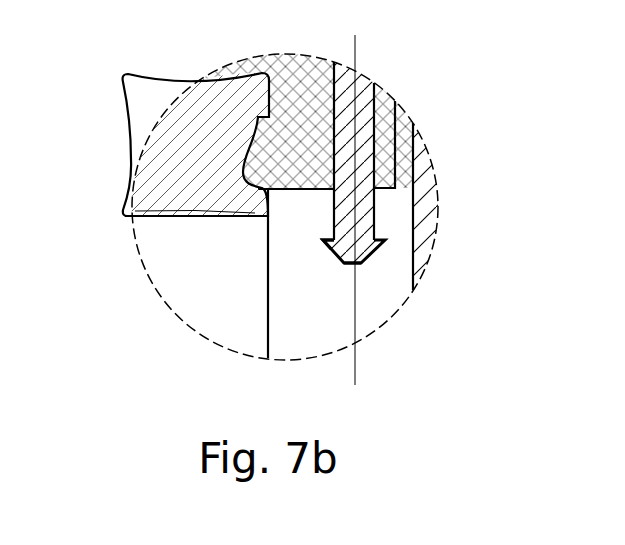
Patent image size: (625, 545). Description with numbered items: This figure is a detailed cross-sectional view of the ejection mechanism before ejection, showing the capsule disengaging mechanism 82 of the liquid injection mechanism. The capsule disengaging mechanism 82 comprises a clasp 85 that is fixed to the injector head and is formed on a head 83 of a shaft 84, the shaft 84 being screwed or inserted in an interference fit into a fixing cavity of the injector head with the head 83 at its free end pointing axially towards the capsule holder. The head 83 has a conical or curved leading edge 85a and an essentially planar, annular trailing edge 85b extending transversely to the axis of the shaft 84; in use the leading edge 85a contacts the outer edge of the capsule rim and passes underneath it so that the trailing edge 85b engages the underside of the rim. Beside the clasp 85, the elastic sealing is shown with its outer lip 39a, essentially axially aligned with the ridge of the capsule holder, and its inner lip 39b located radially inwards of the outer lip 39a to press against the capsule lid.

The outer lip 39a is at (261, 216).
The inner lip 39b is at (132, 215).
The capsule disengaging mechanism 82 is at (382, 128).
The head 83 is at (357, 226).
The shaft 84 is at (367, 152).
The clasp 85 is at (318, 258).
The leading edge 85a is at (345, 262).
The trailing edge 85b is at (323, 240).